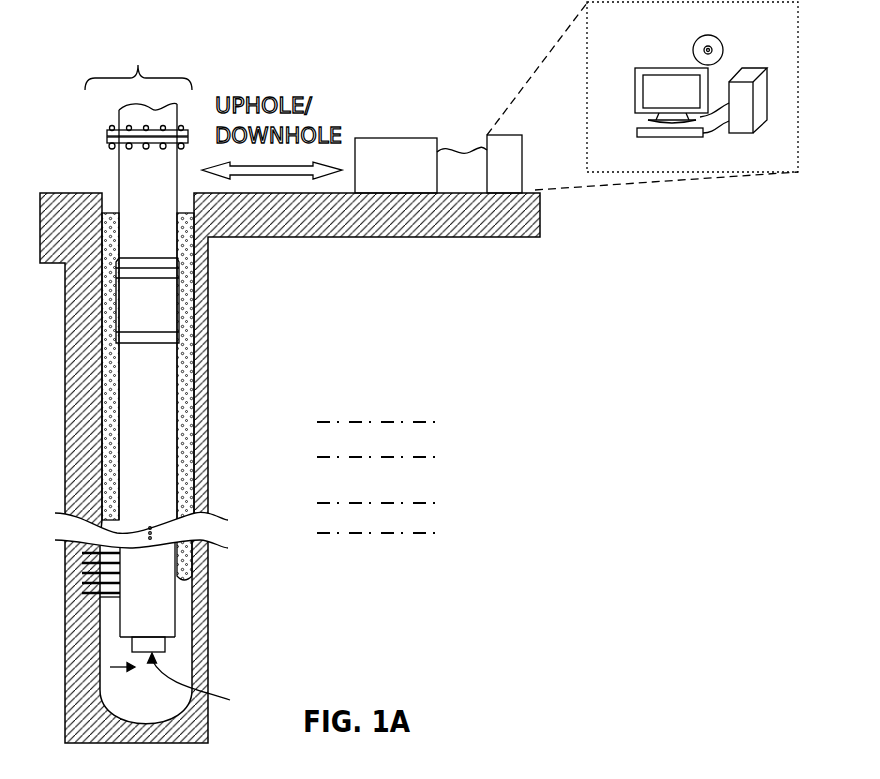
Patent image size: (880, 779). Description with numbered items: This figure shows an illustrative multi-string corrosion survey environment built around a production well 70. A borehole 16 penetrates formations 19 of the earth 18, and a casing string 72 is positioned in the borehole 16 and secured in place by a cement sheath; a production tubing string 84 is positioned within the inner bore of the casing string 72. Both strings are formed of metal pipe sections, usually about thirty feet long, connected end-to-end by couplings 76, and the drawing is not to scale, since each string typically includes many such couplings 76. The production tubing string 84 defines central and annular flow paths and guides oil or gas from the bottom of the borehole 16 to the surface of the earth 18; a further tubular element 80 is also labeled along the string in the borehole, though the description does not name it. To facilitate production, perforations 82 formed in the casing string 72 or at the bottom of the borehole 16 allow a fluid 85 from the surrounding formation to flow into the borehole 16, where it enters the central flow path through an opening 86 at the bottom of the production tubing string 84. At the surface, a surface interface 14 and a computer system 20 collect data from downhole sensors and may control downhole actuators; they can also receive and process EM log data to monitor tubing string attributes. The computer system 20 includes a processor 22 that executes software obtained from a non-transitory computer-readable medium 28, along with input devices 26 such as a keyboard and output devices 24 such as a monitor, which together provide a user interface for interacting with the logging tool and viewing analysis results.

The surface interface 14 is at (438, 177).
The borehole 16 is at (200, 262).
The earth 18 is at (86, 230).
The formations 19 is at (452, 410).
The computer system 20 is at (798, 90).
The processor 22 is at (757, 68).
The output device 24 is at (637, 93).
The input device 26 is at (693, 135).
The non-transitory computer-readable medium 28 is at (702, 37).
The well 70 is at (138, 61).
The casing string 72 is at (119, 175).
The couplings 76 is at (168, 315).
The tubing string 80 is at (192, 468).
The perforations 82 is at (62, 555).
The production tubing string 84 is at (168, 645).
The fluid 85 is at (127, 670).
The opening 86 is at (204, 685).